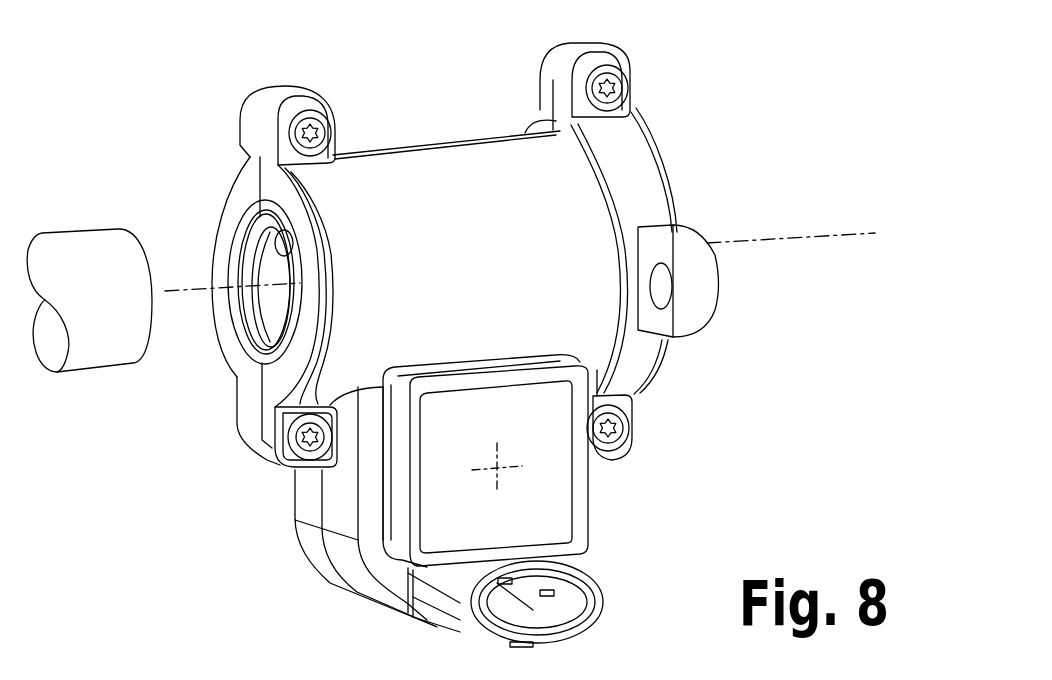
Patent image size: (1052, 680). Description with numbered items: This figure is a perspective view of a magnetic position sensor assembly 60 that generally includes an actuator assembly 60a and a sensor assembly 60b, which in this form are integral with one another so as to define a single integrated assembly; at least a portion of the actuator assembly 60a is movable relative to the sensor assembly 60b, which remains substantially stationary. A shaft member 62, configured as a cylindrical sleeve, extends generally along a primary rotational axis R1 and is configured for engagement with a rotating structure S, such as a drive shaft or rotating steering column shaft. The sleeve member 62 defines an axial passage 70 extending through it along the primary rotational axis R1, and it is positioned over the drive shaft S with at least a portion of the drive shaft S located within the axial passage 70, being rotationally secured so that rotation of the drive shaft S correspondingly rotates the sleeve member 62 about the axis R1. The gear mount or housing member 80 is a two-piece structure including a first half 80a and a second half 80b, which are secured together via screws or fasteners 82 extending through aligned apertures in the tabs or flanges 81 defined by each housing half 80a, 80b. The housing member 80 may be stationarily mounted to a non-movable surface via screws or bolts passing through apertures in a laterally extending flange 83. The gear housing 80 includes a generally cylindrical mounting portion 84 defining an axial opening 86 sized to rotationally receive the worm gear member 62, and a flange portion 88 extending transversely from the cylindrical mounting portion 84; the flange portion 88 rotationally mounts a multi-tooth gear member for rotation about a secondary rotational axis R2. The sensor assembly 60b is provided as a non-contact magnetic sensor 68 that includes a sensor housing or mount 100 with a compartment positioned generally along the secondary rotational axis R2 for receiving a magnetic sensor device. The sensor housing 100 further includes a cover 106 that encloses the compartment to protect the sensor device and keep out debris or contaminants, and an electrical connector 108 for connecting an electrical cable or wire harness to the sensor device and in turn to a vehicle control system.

The rotating structure S is at (74, 200).
The primary rotational axis R1 is at (190, 288).
The secondary rotational axis R2 is at (498, 468).
The magnetic position sensor assembly 60 is at (249, 313).
The actuator assembly 60a is at (226, 395).
The sensor assembly 60b is at (305, 574).
The shaft member 62 is at (277, 320).
The non-contact magnetic sensor 68 is at (335, 608).
The axial passage 70 is at (262, 293).
The housing member 80 is at (418, 349).
The first half 80a is at (205, 195).
The second half 80b is at (645, 155).
The flanges 81 is at (272, 93).
The fasteners 82 is at (311, 116).
The flange 83 is at (697, 247).
The cylindrical mounting portion 84 is at (426, 160).
The axial opening 86 is at (302, 262).
The flange portion 88 is at (300, 598).
The sensor housing 100 is at (581, 517).
The cover 106 is at (438, 535).
The electrical connector 108 is at (608, 594).